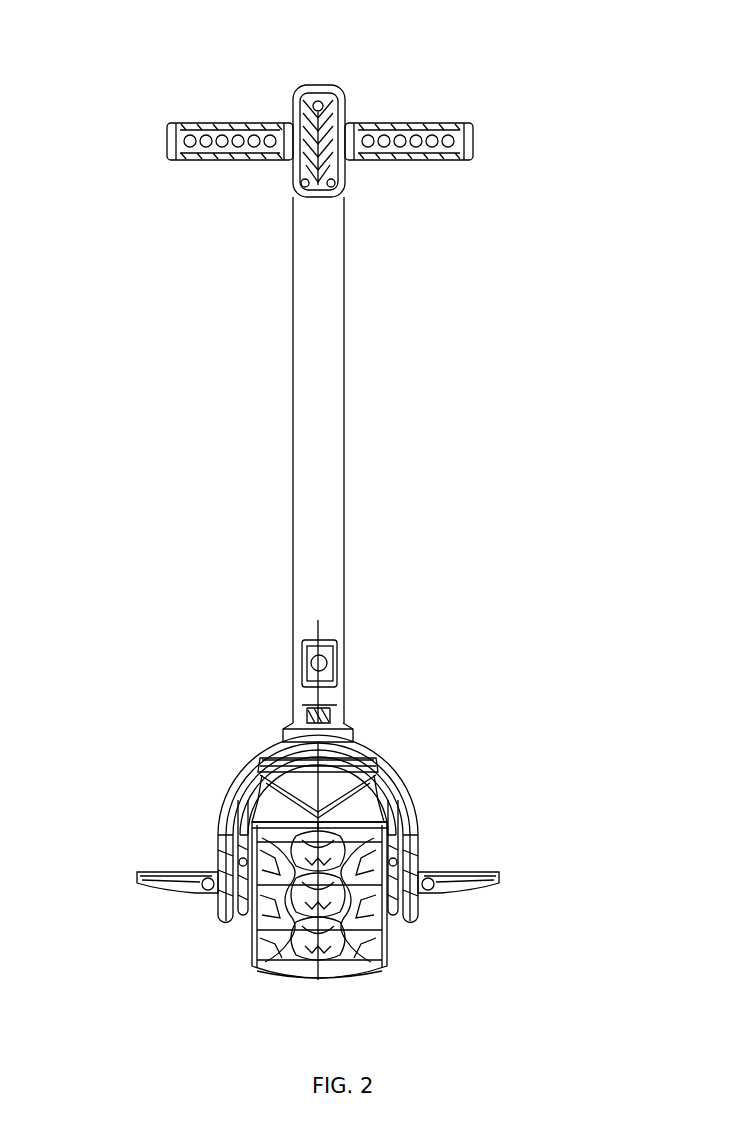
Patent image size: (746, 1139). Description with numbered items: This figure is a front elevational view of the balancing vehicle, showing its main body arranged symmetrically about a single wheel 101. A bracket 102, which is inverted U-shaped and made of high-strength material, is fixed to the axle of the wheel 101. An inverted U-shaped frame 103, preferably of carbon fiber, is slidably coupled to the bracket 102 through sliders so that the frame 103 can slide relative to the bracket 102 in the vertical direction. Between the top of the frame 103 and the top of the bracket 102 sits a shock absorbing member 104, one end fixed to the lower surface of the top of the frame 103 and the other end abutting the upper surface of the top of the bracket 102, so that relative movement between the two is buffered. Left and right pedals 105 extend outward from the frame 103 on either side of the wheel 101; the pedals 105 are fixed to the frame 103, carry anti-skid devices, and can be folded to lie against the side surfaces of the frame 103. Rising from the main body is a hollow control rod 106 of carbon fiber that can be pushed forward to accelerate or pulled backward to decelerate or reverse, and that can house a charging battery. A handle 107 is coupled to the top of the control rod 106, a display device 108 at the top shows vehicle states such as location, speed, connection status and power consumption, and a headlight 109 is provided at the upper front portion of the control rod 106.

The wheel 101 is at (390, 945).
The bracket 102 is at (405, 832).
The frame 103 is at (403, 778).
The shock absorbing member 104 is at (262, 752).
The pedals 105 is at (156, 874).
The control rod 106 is at (332, 556).
The handle 107 is at (227, 158).
The display device 108 is at (320, 87).
The headlight 109 is at (345, 168).